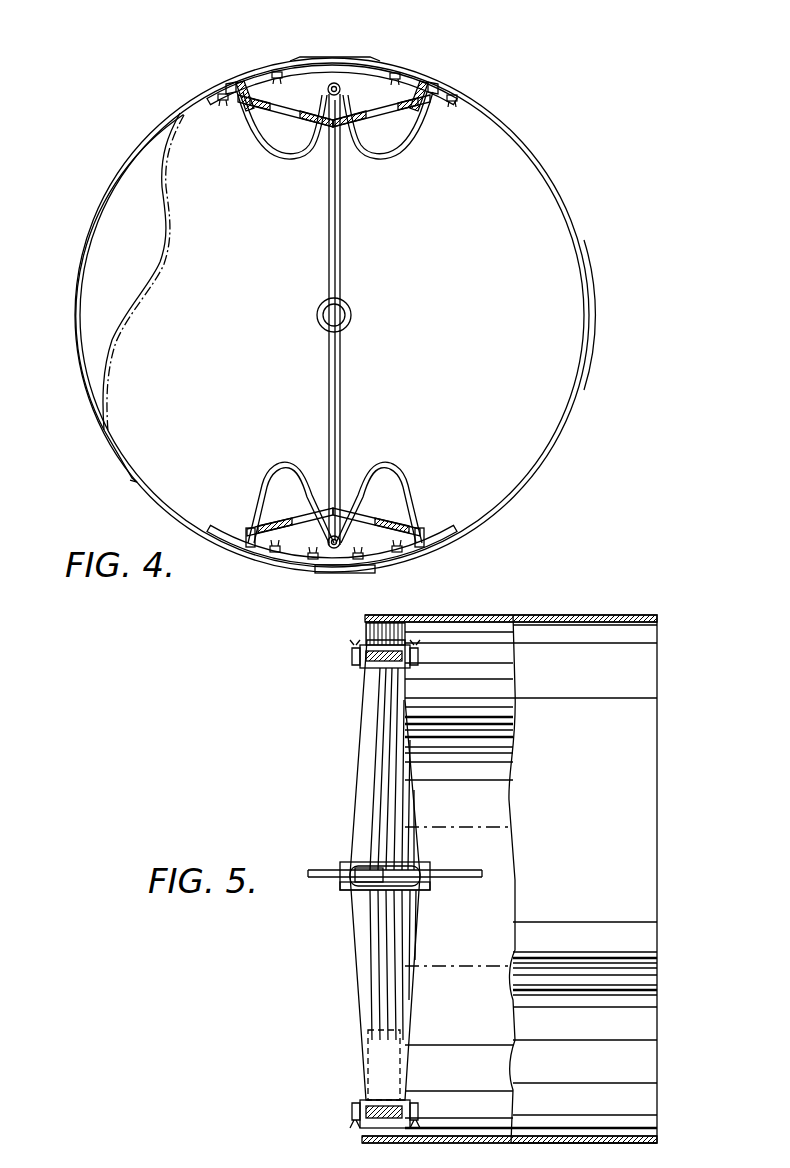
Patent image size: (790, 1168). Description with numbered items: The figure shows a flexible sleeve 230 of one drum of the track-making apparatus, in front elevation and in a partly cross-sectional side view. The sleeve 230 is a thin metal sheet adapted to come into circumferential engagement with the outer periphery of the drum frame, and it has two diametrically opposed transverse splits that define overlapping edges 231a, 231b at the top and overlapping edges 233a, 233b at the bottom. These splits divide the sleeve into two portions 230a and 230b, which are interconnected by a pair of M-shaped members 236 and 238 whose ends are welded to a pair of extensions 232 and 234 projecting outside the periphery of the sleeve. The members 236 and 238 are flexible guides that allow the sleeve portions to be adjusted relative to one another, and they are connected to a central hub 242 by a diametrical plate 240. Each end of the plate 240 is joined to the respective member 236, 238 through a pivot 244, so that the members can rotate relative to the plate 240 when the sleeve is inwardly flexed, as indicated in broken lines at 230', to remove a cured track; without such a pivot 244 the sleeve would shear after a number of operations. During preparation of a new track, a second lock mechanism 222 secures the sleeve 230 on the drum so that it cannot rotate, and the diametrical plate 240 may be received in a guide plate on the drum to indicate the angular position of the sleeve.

In FIG. 4, the flexible sleeve 230 is at (332, 315).
In FIG. 5, the flexible sleeve 230 is at (509, 853).
In FIG. 4, the sleeve portion 230a is at (590, 284).
In FIG. 4, the sleeve portion 230b is at (78, 298).
In FIG. 4, the inwardly flexed sleeve 230' is at (170, 272).
In FIG. 4, the overlapping edge 231a is at (340, 58).
In FIG. 4, the overlapping edge 231b is at (334, 106).
In FIG. 4, the extension 232 is at (285, 62).
In FIG. 4, the overlapping edge 233a is at (327, 574).
In FIG. 4, the overlapping edge 233b is at (300, 530).
In FIG. 4, the extension 234 is at (428, 74).
In FIG. 4, the M-shaped member 236 is at (378, 156).
In FIG. 4, the M-shaped member 238 is at (437, 418).
In FIG. 4, the diametrical plate 240 is at (344, 260).
In FIG. 5, the diametrical plate 240 is at (352, 752).
In FIG. 4, the central hub 242 is at (352, 310).
In FIG. 5, the central hub 242 is at (340, 890).
In FIG. 4, the pivot 244 is at (340, 89).
In FIG. 5, the pivot 244 is at (356, 660).
In FIG. 5, the second lock mechanism 222 is at (428, 868).